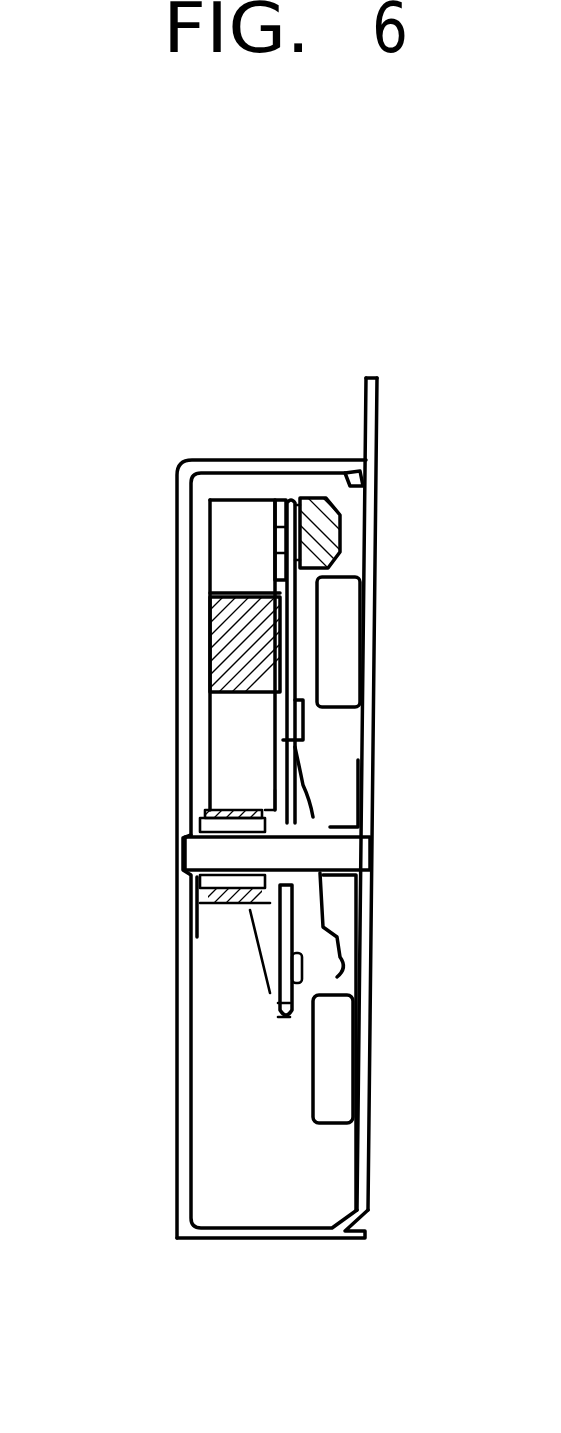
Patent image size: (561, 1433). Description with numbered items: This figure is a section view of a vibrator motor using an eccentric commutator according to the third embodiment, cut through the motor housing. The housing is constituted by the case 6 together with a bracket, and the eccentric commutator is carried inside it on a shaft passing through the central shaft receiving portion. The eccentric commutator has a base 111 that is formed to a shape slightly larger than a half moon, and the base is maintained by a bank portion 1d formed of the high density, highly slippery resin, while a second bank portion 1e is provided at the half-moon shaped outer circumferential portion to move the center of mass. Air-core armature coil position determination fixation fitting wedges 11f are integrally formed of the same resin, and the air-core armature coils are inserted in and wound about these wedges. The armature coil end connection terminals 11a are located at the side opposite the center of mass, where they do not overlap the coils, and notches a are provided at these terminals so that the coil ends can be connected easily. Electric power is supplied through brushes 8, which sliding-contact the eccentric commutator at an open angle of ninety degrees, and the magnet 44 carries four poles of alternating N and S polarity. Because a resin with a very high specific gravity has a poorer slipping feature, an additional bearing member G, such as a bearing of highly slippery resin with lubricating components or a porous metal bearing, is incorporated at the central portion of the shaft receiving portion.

The case 6 is at (280, 455).
The second bank portion 1e is at (340, 527).
The base of eccentric commutator 111 is at (288, 575).
The air-core armature coil position determination fixation fitting wedges 11f is at (235, 655).
The magnet 44 is at (340, 620).
The bank portion 1d is at (313, 817).
The bearing member G is at (205, 824).
The brushes 8 is at (320, 897).
The armature coil end connection terminals 11a is at (280, 1003).
The notches a is at (283, 1025).